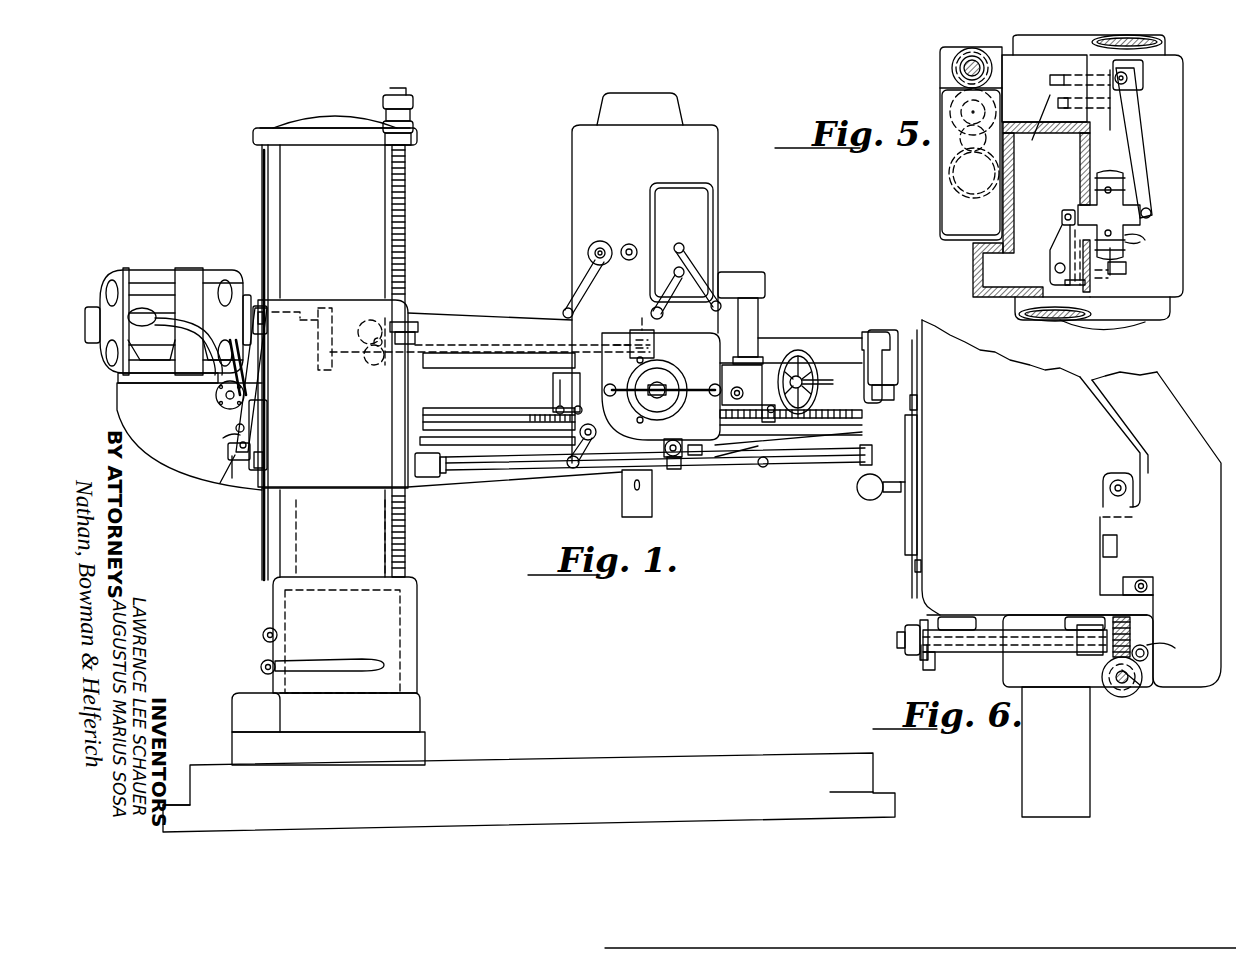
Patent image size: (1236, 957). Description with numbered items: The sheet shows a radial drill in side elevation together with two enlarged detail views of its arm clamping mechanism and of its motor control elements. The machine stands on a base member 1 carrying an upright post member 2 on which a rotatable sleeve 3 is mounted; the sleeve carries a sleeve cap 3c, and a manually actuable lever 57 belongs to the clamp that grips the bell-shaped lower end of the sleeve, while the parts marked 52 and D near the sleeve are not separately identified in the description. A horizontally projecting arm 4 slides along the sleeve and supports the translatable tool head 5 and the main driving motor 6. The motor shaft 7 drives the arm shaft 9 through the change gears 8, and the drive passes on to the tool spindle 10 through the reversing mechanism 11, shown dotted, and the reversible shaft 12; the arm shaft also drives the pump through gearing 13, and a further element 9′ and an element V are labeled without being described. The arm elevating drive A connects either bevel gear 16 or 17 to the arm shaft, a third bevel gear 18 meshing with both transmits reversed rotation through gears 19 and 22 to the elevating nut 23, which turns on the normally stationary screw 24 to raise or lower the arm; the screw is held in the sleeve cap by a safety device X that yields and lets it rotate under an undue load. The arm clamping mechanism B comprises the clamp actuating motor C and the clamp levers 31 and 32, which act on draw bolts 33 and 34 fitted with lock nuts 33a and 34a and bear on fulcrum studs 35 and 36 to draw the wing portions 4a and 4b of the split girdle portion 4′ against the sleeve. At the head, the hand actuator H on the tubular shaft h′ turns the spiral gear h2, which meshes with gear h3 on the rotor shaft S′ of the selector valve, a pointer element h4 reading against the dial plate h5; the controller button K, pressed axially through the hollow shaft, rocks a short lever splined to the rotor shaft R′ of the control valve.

In FIG. 1, the base member 1 is at (528, 782).
In FIG. 1, the upright post member 2 is at (400, 640).
In FIG. 1, the rotatable sleeve 3 is at (240, 550).
In FIG. 1, the sleeve cap 3c is at (315, 140).
In FIG. 1, the arm 4 is at (503, 322).
In FIG. 5, the arm 4 is at (972, 266).
In FIG. 6, the arm 4 is at (1156, 529).
In FIG. 1, the girdle portion of the arm 4′ is at (330, 485).
In FIG. 5, the girdle portion of the arm 4′ is at (1172, 188).
In FIG. 5, the wing portion 4a is at (1141, 75).
In FIG. 5, the wing portion 4b is at (1044, 88).
In FIG. 1, the tool head 5 is at (664, 278).
In FIG. 5, the tool head 5 is at (1140, 325).
In FIG. 6, the tool head 5 is at (1010, 467).
In FIG. 1, the main driving motor 6 is at (190, 280).
In FIG. 1, the motor shaft 7 is at (305, 305).
In FIG. 5, the motor shaft 7 is at (952, 70).
In FIG. 1, the change gears 8 is at (318, 340).
In FIG. 5, the change gears 8 is at (950, 102).
In FIG. 1, the arm shaft 9 is at (835, 350).
In FIG. 1, the guide rail 9′ is at (487, 362).
In FIG. 1, the tool spindle 10 is at (645, 504).
In FIG. 6, the tool spindle 10 is at (1056, 752).
In FIG. 1, the reversing mechanism 11 is at (628, 326).
In FIG. 1, the reversible shaft 12 is at (640, 320).
In FIG. 5, the gearing 13 is at (960, 145).
In FIG. 1, the bevel gear 16 is at (382, 360).
In FIG. 1, the bevel gear 17 is at (368, 365).
In FIG. 1, the third bevel gear 18 is at (360, 320).
In FIG. 1, the gear 19 is at (386, 315).
In FIG. 1, the gear 22 is at (418, 340).
In FIG. 1, the elevating nut 23 is at (408, 315).
In FIG. 1, the screw 24 is at (406, 238).
In FIG. 1, the clamp lever 31 is at (262, 378).
In FIG. 5, the clamp lever 31 is at (1140, 122).
In FIG. 1, the clamp lever 32 is at (266, 452).
In FIG. 5, the clamp lever 32 is at (1060, 238).
In FIG. 5, the draw bolt 33 is at (1052, 85).
In FIG. 5, the lock nut 33a is at (1039, 127).
In FIG. 5, the draw bolt 34 is at (1126, 270).
In FIG. 5, the lock nut 34a is at (1120, 278).
In FIG. 5, the fulcrum stud 35 is at (1165, 62).
In FIG. 5, the fulcrum stud 36 is at (1068, 286).
In FIG. 1, the column sleeve 52 is at (262, 190).
In FIG. 1, the manually actuable lever 57 is at (370, 658).
In FIG. 1, the arm elevating mechanism drive A is at (475, 373).
In FIG. 1, the arm clamping mechanism B is at (225, 434).
In FIG. 5, the arm clamping mechanism B is at (1135, 235).
In FIG. 1, the clamp actuating motor C is at (228, 462).
In FIG. 5, the clamp actuating motor C is at (1105, 205).
In FIG. 1, the disc D is at (215, 398).
In FIG. 1, the hand actuator H is at (682, 470).
In FIG. 6, the hand actuator H is at (905, 632).
In FIG. 1, the controller button K is at (690, 465).
In FIG. 6, the controller button K is at (898, 658).
In FIG. 1, the rotor shaft of the control valve R′ is at (588, 468).
In FIG. 6, the rotor shaft of the control valve R′ is at (1150, 650).
In FIG. 1, the rotor shaft of the selector valve S′ is at (538, 472).
In FIG. 6, the rotor shaft of the selector valve S′ is at (1135, 685).
In FIG. 1, the bolt V is at (428, 480).
In FIG. 1, the safety device X is at (413, 116).
In FIG. 6, the tubular shaft h′ is at (975, 655).
In FIG. 6, the spiral gear h2 is at (1170, 627).
In FIG. 6, the gear h3 is at (1128, 697).
In FIG. 6, the pointer element h4 is at (918, 625).
In FIG. 1, the dial plate h5 is at (692, 445).